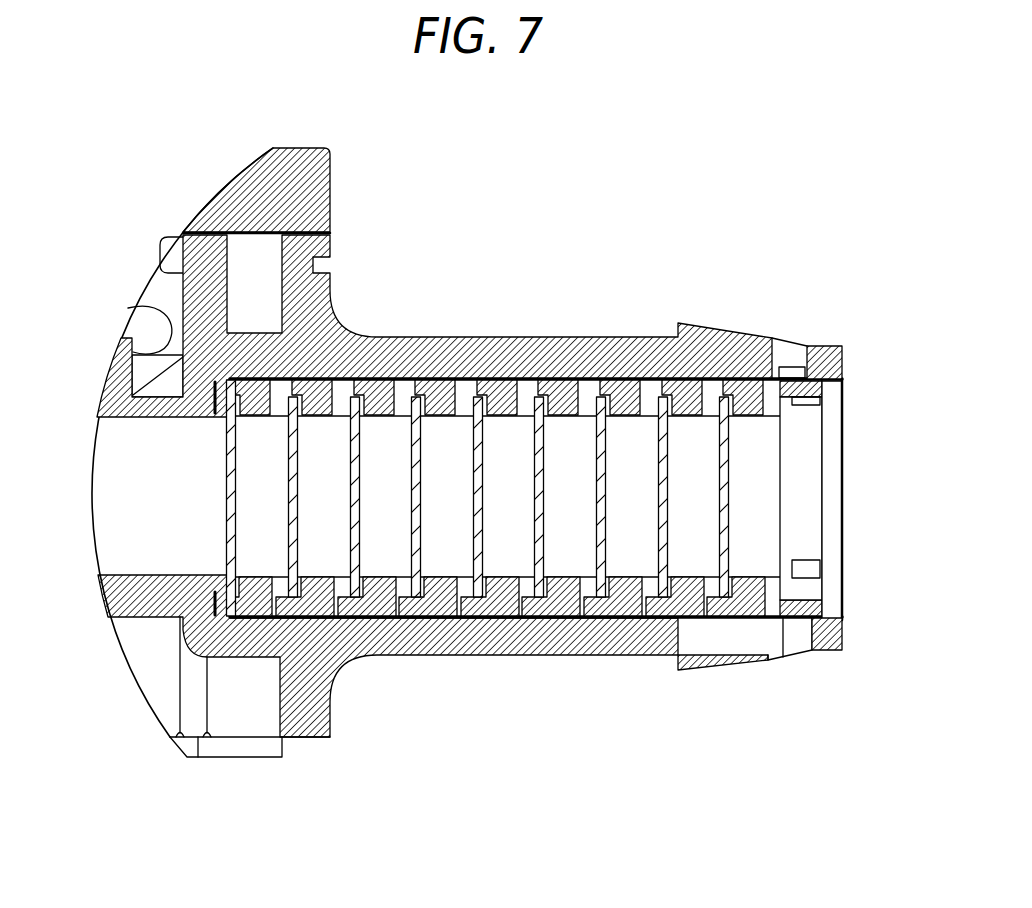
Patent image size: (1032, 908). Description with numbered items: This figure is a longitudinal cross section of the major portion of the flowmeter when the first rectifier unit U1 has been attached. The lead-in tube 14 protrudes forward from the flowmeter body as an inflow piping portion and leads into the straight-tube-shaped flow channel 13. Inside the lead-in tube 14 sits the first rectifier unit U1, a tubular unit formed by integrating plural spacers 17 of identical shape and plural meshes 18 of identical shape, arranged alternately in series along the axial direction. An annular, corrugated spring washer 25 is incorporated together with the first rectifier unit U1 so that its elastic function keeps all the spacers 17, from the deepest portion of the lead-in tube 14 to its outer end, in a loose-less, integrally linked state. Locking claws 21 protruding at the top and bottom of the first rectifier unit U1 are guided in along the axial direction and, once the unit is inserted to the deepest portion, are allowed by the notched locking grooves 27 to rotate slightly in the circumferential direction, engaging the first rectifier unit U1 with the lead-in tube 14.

The flow channel 13 is at (103, 441).
The lead-in tube 14 is at (503, 337).
The spacer 17 is at (818, 392).
The mesh 18 is at (597, 378).
The locking claw 21 is at (796, 368).
The spring washer 25 is at (230, 514).
The locking groove 27 is at (785, 343).
The first rectifier unit U1 is at (843, 488).